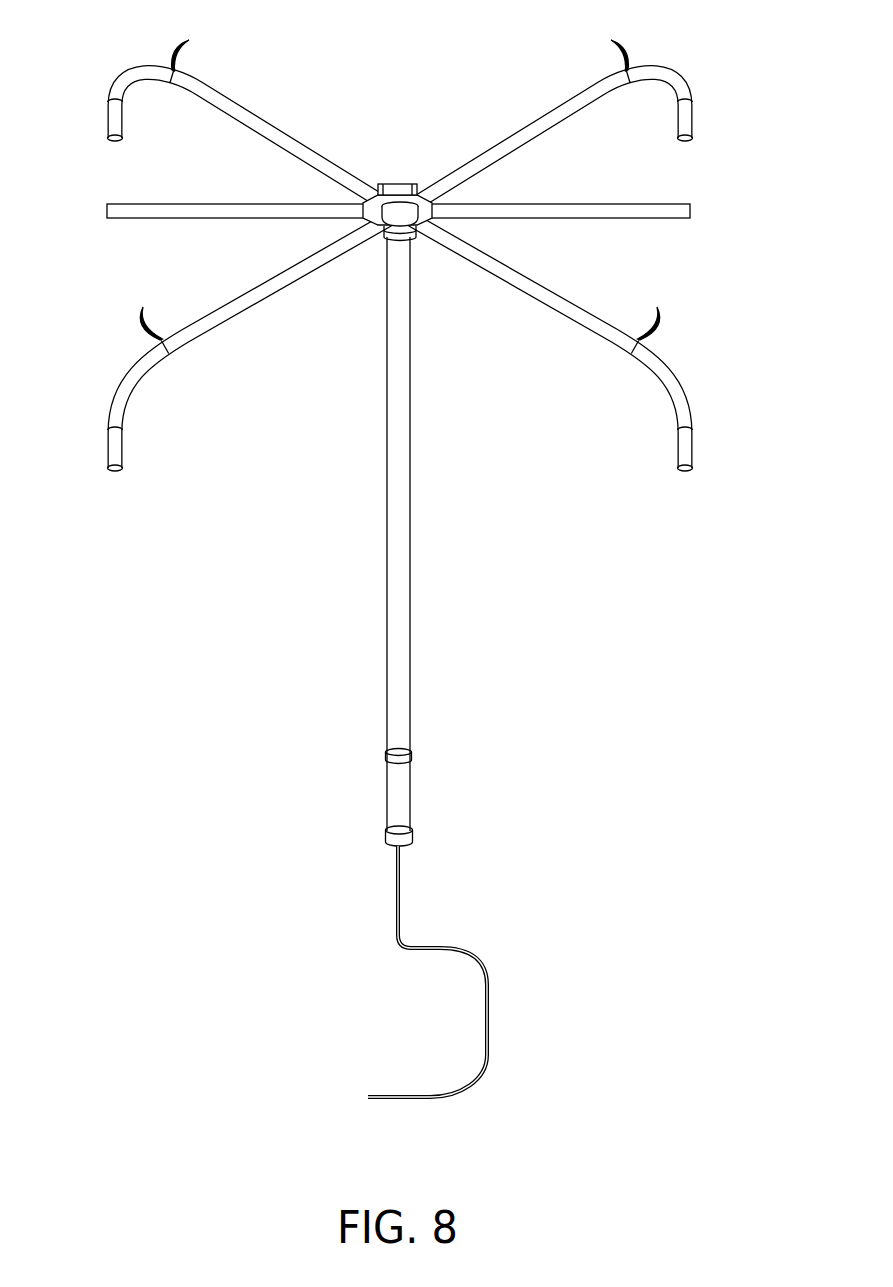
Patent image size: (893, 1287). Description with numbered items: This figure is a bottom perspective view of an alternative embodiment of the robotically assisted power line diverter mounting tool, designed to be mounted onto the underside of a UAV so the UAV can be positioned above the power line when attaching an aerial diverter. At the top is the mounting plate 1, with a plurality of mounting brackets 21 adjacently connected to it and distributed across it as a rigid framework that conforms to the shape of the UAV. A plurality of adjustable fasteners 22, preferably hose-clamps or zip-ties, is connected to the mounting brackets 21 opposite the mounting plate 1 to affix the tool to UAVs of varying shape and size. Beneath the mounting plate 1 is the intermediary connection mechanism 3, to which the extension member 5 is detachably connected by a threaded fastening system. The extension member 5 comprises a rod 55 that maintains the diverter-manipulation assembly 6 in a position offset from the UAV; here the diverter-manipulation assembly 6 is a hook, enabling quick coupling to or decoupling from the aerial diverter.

The mounting plate 1 is at (399, 187).
The mounting brackets 21 is at (275, 135).
The adjustable fasteners 22 is at (190, 42).
The intermediary connection mechanism 3 is at (418, 233).
The extension member 5 is at (390, 552).
The rod 55 is at (403, 593).
The diverter-manipulation assembly 6 is at (489, 1013).